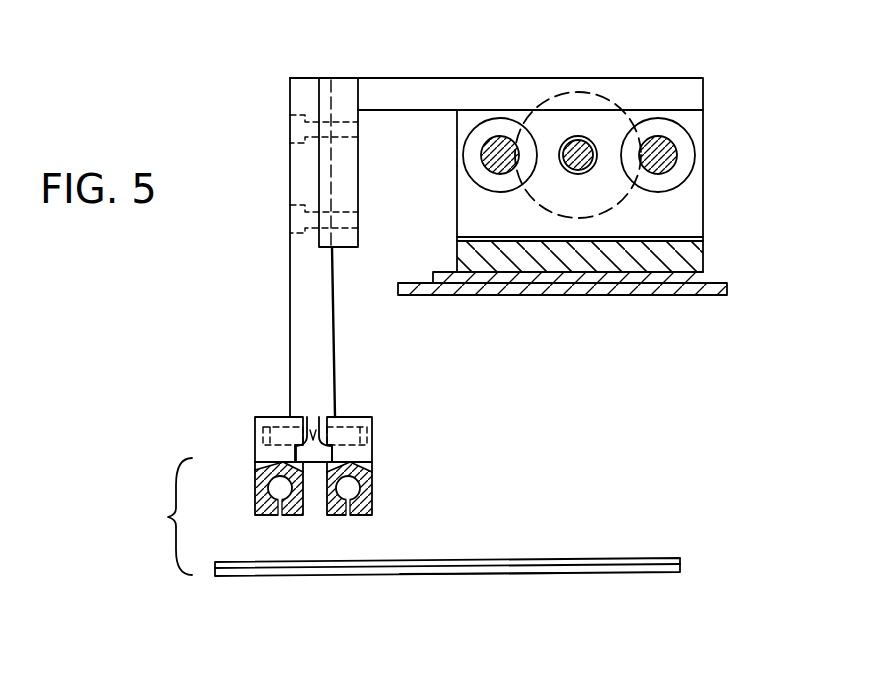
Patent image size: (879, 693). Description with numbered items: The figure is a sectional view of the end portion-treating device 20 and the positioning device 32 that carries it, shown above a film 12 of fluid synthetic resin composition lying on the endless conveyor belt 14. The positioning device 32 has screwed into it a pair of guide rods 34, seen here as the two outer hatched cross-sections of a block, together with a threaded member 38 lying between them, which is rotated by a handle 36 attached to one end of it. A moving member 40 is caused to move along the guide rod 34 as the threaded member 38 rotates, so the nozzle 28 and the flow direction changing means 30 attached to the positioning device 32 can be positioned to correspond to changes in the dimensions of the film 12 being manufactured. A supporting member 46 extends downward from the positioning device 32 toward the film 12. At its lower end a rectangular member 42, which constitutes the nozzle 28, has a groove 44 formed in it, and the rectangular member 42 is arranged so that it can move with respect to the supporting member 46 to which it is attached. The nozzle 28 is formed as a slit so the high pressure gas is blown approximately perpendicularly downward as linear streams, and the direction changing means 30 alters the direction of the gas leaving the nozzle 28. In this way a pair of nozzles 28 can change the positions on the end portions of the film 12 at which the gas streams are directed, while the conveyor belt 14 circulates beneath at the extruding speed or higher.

The film 12 is at (532, 558).
The endless conveyor belt 14 is at (477, 574).
The end portion-treating device 20 is at (231, 330).
The nozzle 28 is at (280, 514).
The flow direction changing means 30 is at (280, 412).
The positioning device 32 is at (718, 96).
The guide rods 34 is at (481, 158).
The handle 36 is at (610, 90).
The threaded member 38 is at (573, 137).
The moving member 40 is at (465, 112).
The rectangular member 42 is at (256, 452).
The groove 44 is at (316, 436).
The supporting member 46 is at (291, 285).